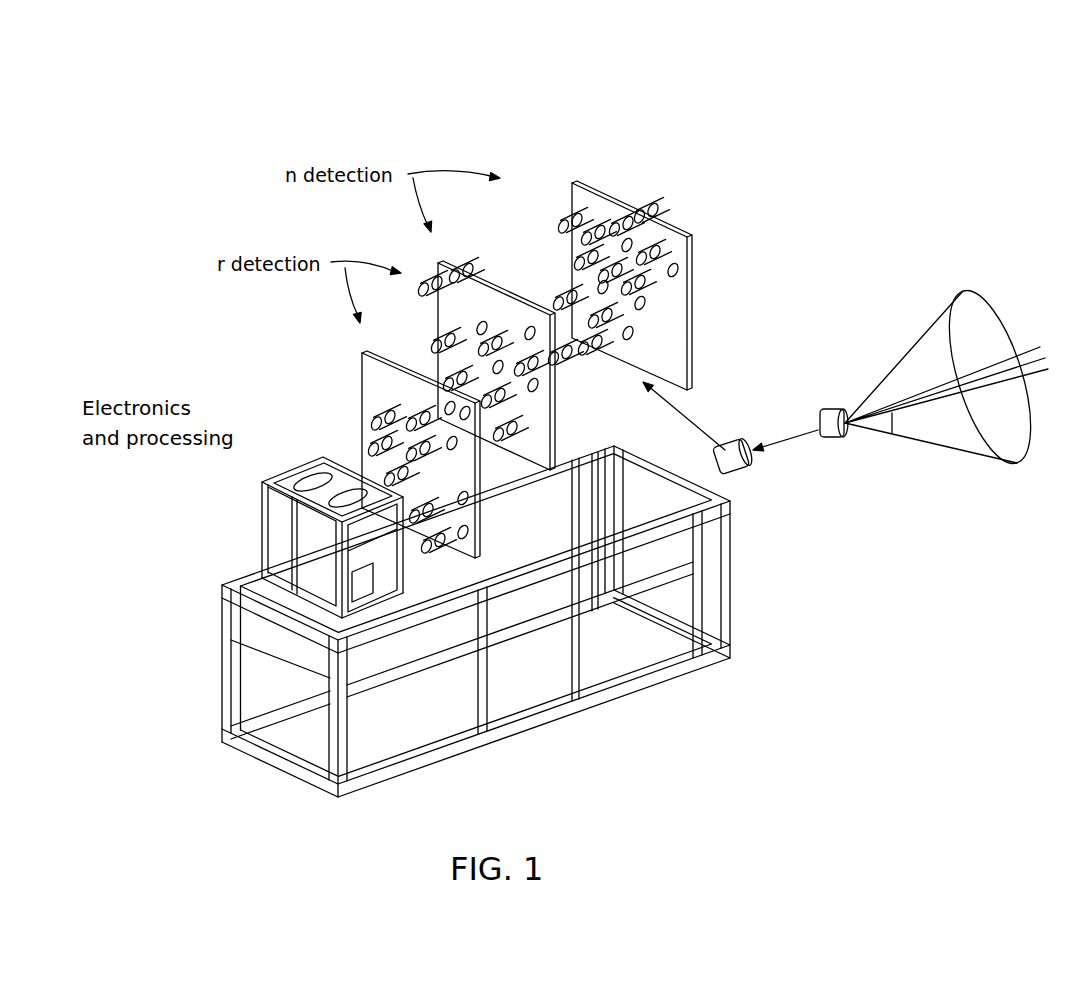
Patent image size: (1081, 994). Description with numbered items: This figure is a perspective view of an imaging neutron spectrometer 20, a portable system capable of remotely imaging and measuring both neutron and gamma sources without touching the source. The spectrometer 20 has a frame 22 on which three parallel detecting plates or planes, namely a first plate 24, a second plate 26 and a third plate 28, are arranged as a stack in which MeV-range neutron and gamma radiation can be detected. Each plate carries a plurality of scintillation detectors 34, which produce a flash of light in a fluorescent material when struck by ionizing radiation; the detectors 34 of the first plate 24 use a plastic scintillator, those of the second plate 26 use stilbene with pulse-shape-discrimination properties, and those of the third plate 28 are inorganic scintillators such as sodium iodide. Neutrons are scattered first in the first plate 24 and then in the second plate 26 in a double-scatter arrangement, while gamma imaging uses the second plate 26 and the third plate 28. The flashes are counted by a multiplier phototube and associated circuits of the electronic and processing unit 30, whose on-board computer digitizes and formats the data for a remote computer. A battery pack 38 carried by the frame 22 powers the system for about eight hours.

The imaging neutron spectrometer 20 is at (692, 142).
The frame 22 is at (641, 692).
The first detecting plate 24 is at (572, 176).
The second detecting plate 26 is at (493, 283).
The third detecting plate 28 is at (360, 380).
The electronic and processing unit 30 is at (260, 512).
The detector 34 is at (660, 262).
The battery pack 38 is at (265, 630).